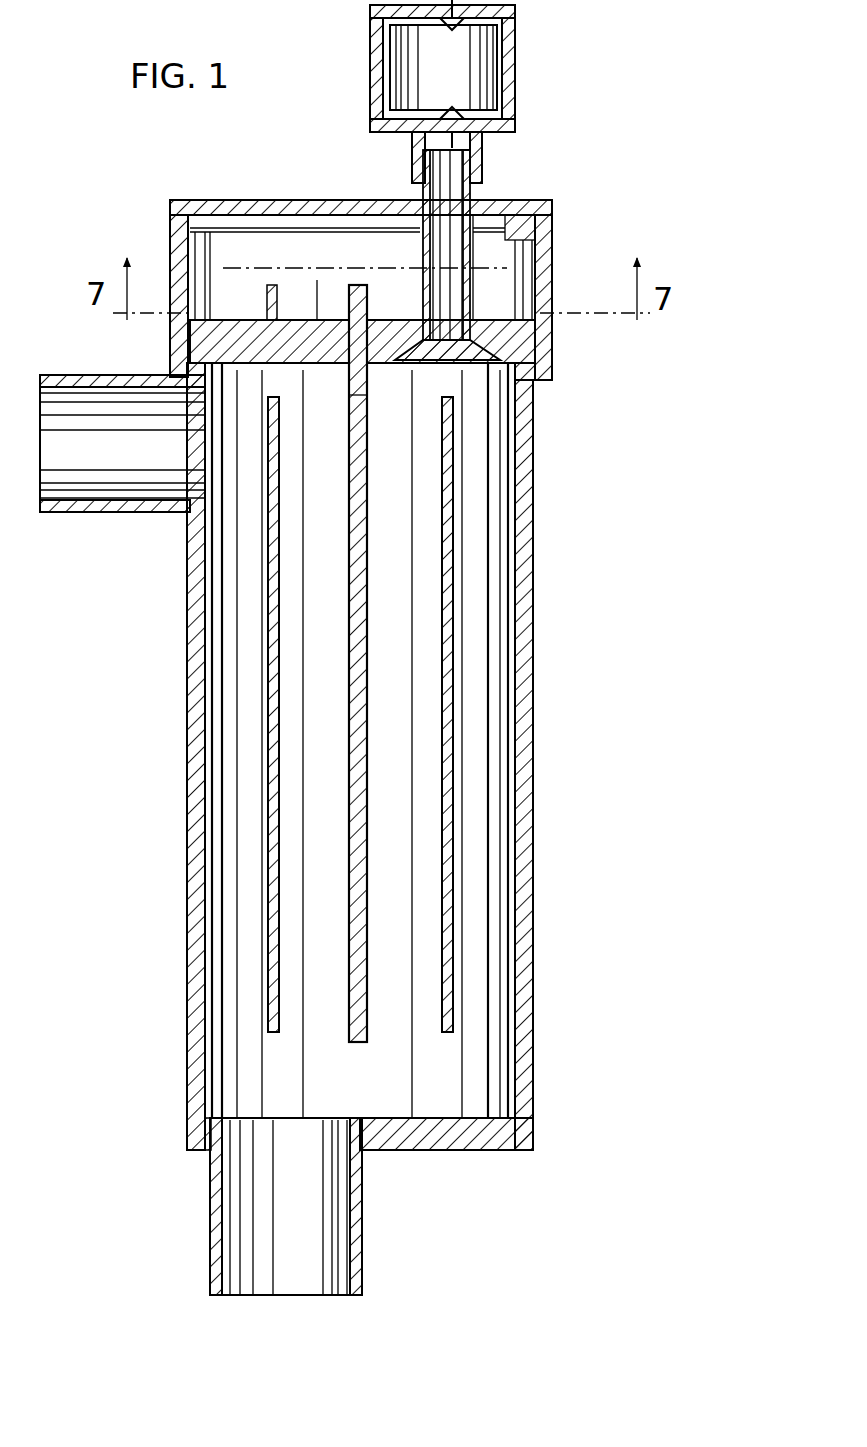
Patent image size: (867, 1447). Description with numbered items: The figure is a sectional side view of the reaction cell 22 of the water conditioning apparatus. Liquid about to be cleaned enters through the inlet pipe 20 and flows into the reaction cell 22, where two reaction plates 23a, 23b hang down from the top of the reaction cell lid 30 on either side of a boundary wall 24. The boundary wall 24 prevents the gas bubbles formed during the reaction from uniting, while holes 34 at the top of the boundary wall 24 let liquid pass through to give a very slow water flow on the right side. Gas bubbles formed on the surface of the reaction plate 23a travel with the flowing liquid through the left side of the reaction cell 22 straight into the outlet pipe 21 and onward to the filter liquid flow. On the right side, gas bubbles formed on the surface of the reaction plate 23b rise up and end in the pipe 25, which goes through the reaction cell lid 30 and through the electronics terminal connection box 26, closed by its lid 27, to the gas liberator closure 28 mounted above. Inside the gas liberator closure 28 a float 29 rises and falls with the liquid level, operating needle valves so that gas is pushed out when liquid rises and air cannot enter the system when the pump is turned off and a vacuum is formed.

The inlet pipe 20 is at (305, 1212).
The outlet pipe 21 is at (125, 410).
The reaction cell 22 is at (535, 715).
The reaction plate 23a is at (275, 782).
The reaction plate 23b is at (445, 598).
The boundary wall 24 is at (367, 705).
The pipe 25 is at (440, 276).
The electronics terminal connection box 26 is at (553, 283).
The lid of the electrical terminal connection box 27 is at (503, 210).
The gas liberator closure 28 is at (585, 62).
The float 29 is at (415, 72).
The reaction cell lid 30 is at (312, 320).
The holes 34 is at (357, 410).